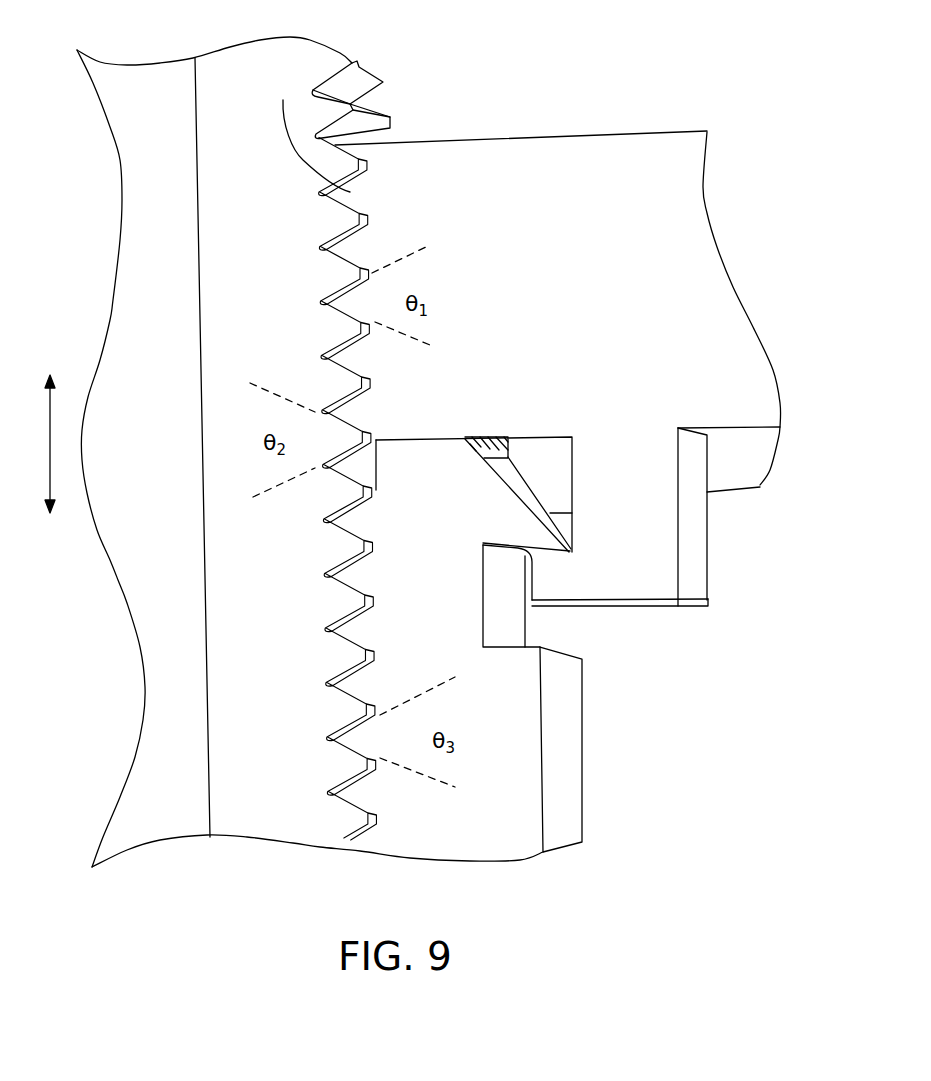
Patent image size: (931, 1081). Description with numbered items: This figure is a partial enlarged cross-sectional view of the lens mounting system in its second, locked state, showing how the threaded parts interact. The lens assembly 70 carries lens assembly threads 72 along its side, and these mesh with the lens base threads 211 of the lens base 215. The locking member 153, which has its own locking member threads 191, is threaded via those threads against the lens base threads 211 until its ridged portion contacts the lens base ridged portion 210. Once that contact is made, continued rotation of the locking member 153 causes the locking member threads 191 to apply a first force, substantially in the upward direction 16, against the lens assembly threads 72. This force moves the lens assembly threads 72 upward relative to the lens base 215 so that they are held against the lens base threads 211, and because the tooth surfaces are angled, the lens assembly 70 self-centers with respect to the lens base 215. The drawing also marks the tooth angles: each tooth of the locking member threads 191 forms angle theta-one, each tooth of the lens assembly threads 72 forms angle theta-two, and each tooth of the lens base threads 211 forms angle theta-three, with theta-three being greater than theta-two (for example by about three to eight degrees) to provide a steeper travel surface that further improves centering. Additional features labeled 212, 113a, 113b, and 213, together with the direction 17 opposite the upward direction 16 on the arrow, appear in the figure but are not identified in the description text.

The lens assembly 70 is at (160, 240).
The locking member threads 191 is at (283, 100).
The lens assembly threads 72 is at (362, 80).
The lens base threads 211 is at (338, 598).
The locking member 153 is at (562, 200).
The lens base ridged portion 210 is at (495, 437).
The inclined surface 212 is at (517, 488).
The vertical arm of hook 113a is at (640, 506).
The horizontal arm of hook 113b is at (563, 575).
The lower block 213 is at (517, 630).
The lens base 215 is at (563, 792).
The upward direction 16 is at (50, 426).
The downward direction 17 is at (50, 521).